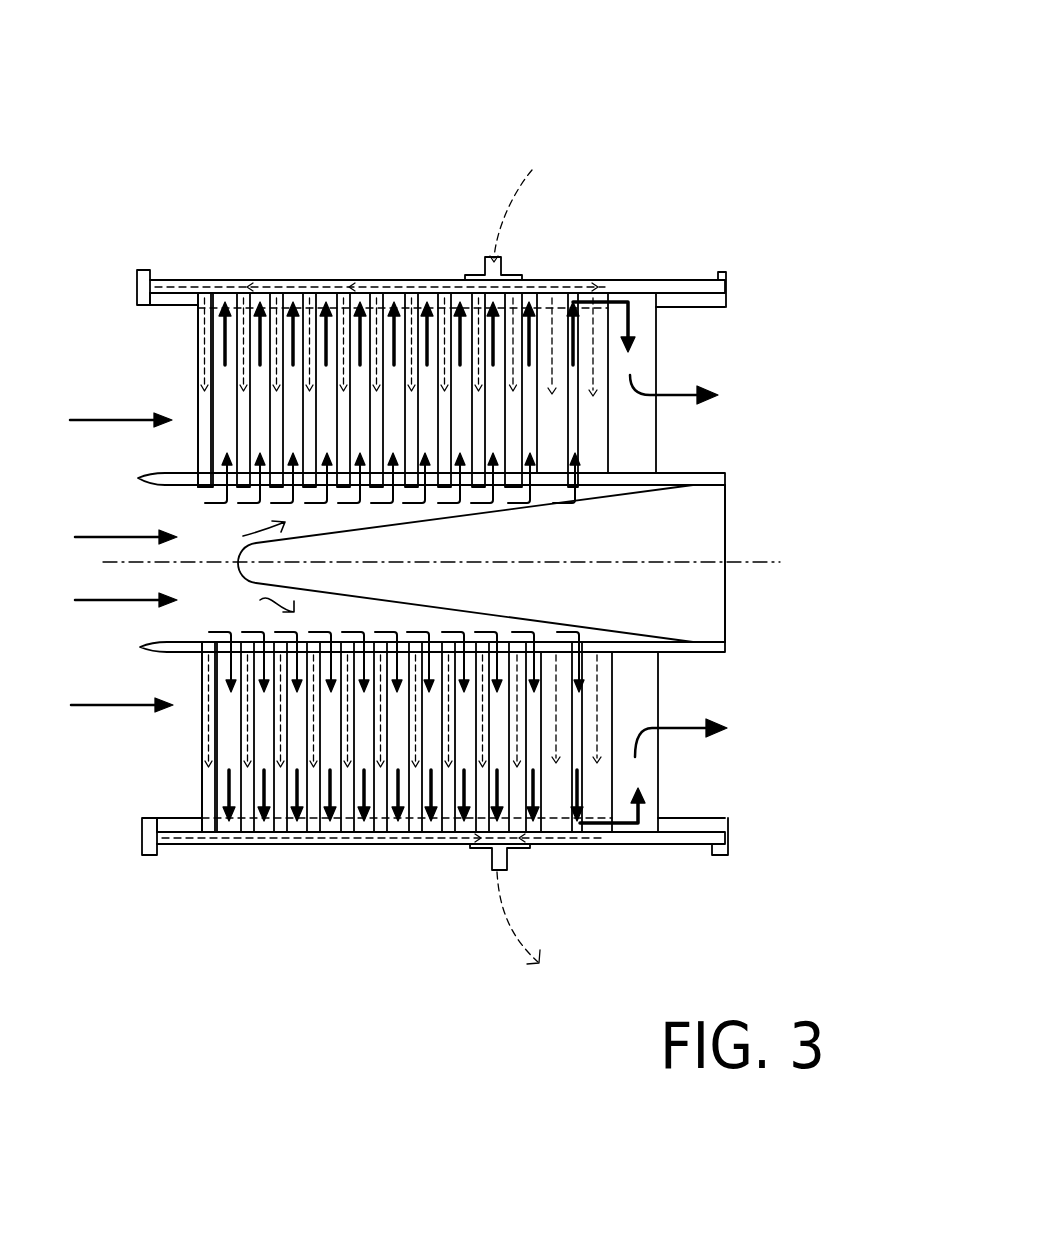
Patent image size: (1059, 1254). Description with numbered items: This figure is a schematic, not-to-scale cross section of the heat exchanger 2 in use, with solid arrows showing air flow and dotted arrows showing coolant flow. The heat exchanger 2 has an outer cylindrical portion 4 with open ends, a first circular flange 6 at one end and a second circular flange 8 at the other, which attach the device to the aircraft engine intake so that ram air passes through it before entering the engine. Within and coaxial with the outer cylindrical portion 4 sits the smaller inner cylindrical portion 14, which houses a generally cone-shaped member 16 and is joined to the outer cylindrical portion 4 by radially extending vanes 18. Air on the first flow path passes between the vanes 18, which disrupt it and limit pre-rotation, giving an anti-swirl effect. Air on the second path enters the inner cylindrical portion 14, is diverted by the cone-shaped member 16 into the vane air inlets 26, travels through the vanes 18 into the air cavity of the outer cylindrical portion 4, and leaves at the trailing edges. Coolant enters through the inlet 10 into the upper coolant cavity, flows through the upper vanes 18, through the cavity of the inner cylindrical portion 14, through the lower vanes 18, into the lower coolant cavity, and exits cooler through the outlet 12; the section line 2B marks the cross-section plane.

The heat exchanger 2 is at (671, 132).
The outer cylindrical portion 4 is at (237, 283).
The first circular flange 6 is at (138, 288).
The second circular flange 8 is at (730, 288).
The inlet 10 is at (503, 264).
The outlet 12 is at (492, 857).
The inner cylindrical portion 14 is at (150, 482).
The generally cone-shaped member 16 is at (497, 612).
The vanes 18 is at (198, 371).
The vane air inlets 26 is at (253, 569).
The section line 2B is at (757, 558).